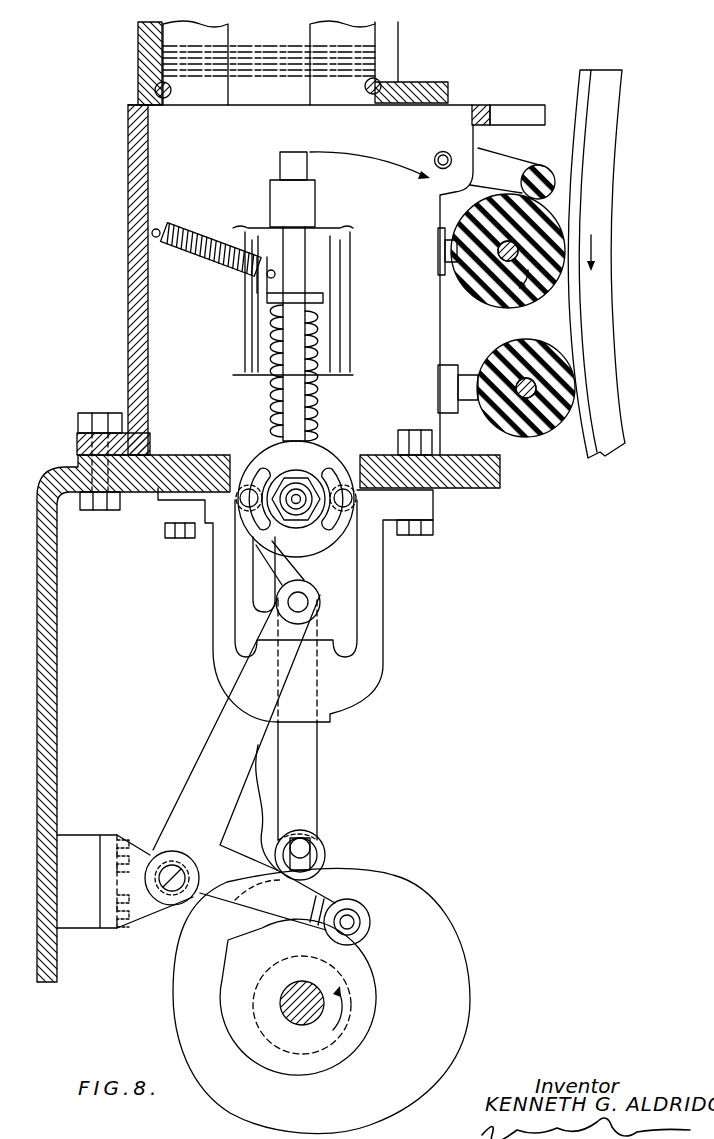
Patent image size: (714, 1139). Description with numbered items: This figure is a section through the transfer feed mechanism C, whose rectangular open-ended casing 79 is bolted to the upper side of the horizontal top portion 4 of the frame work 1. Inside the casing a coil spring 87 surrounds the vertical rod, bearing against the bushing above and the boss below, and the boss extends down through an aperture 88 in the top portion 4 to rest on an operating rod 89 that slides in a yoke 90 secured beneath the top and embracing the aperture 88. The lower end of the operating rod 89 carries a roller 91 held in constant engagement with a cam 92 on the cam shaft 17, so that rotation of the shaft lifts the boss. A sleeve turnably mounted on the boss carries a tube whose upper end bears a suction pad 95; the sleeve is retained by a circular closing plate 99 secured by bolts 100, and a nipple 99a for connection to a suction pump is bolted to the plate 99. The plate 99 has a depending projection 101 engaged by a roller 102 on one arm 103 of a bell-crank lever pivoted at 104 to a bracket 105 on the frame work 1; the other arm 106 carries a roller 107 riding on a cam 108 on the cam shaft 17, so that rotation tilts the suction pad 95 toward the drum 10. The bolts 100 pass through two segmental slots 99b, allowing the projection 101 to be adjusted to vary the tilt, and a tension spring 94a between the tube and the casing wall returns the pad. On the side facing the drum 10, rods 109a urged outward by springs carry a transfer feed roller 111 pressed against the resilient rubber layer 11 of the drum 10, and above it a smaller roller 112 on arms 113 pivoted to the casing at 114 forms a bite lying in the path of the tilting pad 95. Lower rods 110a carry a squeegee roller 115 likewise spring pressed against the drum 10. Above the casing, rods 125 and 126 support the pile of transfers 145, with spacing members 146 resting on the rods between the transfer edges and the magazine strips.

The spacing members 146 is at (158, 33).
The pile of transfers 145 is at (270, 58).
The rod 125 is at (155, 90).
The rod 126 is at (381, 85).
The mechanism C is at (113, 178).
The casing 79 is at (138, 277).
The pivot 114 is at (443, 151).
The suction pad 95 is at (280, 162).
The coil spring 87 is at (280, 325).
The tension spring 94a is at (197, 232).
The arms 113 is at (493, 157).
The smaller roller 112 is at (540, 166).
The transfer feed roller 111 is at (486, 300).
The rods 109a is at (441, 250).
The squeegee roller 115 is at (497, 420).
The rods 110a is at (458, 382).
The drum 10 is at (606, 452).
The layer of resilient rubber 11 is at (586, 446).
The horizontal top portion 4 is at (138, 490).
The frame work 1 is at (88, 985).
The aperture 88 is at (240, 455).
The circular closing plate 99 is at (305, 490).
The nipple 99a is at (300, 494).
The segmental slots 99b is at (258, 462).
The bolts 100 is at (240, 520).
The yoke 90 is at (380, 660).
The depending projection 101 is at (262, 578).
The roller 102 is at (330, 600).
The arm 103 is at (226, 728).
The operating rod 89 is at (318, 768).
The roller 91 is at (325, 852).
The cam 92 is at (387, 884).
The cam 108 is at (366, 996).
The cam shaft 17 is at (322, 990).
The roller 107 is at (371, 922).
The arm 106 is at (266, 890).
The pivot 104 is at (170, 893).
The bracket 105 is at (85, 842).